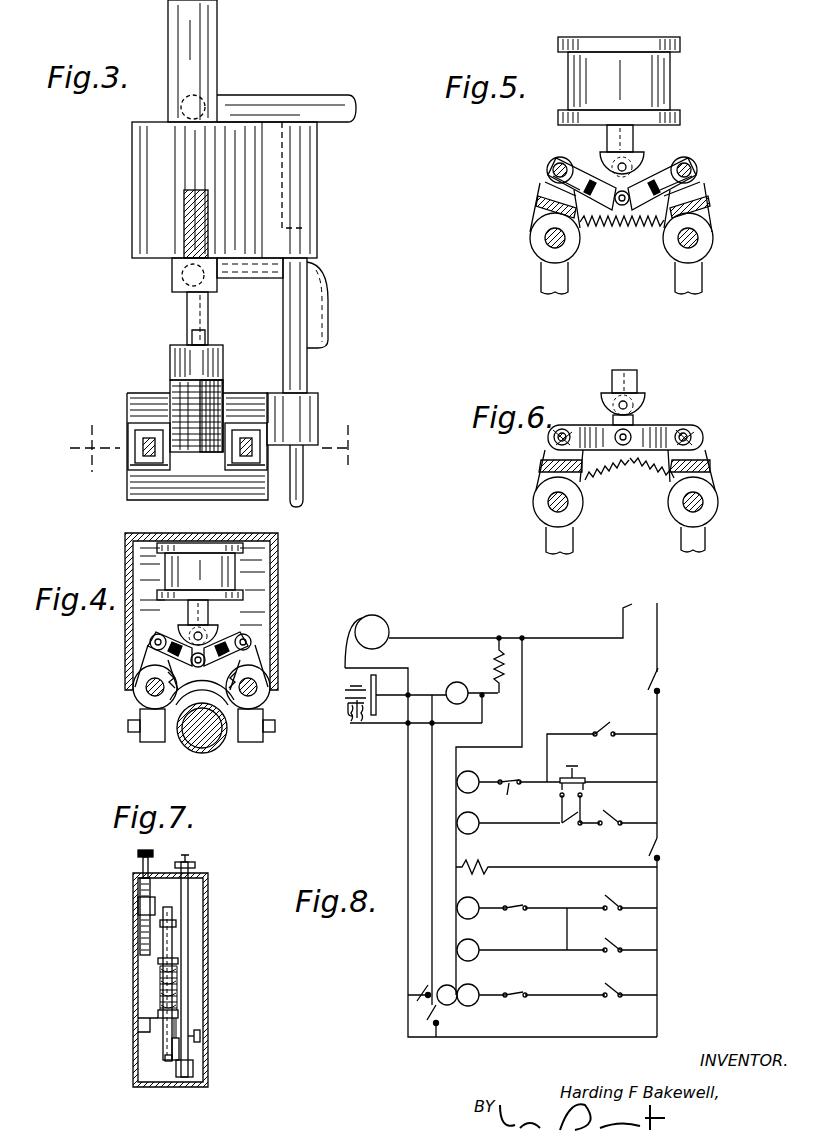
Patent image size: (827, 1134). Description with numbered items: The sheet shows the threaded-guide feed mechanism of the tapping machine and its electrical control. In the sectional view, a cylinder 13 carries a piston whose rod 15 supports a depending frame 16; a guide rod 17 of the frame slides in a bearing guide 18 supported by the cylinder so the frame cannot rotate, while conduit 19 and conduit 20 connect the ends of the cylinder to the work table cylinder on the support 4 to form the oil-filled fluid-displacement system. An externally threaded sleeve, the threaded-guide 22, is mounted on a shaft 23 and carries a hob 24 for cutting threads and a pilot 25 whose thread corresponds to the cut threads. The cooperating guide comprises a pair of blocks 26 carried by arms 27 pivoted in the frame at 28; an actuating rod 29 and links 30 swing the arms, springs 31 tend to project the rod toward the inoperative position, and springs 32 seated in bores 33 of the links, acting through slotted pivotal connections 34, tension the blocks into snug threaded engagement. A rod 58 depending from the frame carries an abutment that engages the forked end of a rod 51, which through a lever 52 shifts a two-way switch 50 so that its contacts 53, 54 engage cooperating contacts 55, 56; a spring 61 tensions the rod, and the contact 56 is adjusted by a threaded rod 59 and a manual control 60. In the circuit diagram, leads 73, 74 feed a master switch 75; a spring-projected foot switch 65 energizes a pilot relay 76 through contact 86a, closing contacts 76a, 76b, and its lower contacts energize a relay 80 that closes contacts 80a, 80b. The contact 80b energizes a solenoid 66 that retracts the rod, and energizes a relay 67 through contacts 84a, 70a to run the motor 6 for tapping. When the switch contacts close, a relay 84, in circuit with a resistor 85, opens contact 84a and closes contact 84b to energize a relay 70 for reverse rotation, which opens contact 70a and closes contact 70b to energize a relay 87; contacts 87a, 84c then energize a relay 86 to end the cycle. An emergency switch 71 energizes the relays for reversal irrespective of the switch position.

In FIG. 3, the support 4 is at (212, 448).
In FIG. 8, the motor 6 is at (372, 615).
In FIG. 3, the second cylinder 13 is at (145, 205).
In FIG. 3, the piston rod 15 is at (192, 303).
In FIG. 3, the frame 16 is at (135, 398).
In FIG. 4, the frame 16 is at (278, 585).
In FIG. 3, the guide rod 17 is at (300, 292).
In FIG. 3, the bearing guide 18 is at (310, 238).
In FIG. 3, the conduit 19 is at (252, 105).
In FIG. 3, the conduit 20 is at (258, 272).
In FIG. 3, the threaded-guide 22 is at (222, 392).
In FIG. 4, the threaded-guide 22 is at (190, 750).
In FIG. 3, the shaft 23 is at (195, 338).
In FIG. 4, the shaft 23 is at (210, 745).
In FIG. 3, the hob 24 is at (215, 355).
In FIG. 3, the pilot 25 is at (200, 452).
In FIG. 3, the blocks 26 is at (168, 470).
In FIG. 4, the blocks 26 is at (165, 735).
In FIG. 3, the arms 27 is at (140, 468).
In FIG. 4, the arms 27 is at (140, 672).
In FIG. 5, the arms 27 is at (532, 214).
In FIG. 6, the arms 27 is at (570, 548).
In FIG. 3, the pivot 28 is at (149, 438).
In FIG. 4, the pivot 28 is at (150, 694).
In FIG. 5, the pivot 28 is at (550, 246).
In FIG. 6, the pivot 28 is at (553, 510).
In FIG. 4, the actuating rod 29 is at (206, 616).
In FIG. 5, the actuating rod 29 is at (633, 148).
In FIG. 6, the actuating rod 29 is at (637, 382).
In FIG. 4, the links 30 is at (180, 644).
In FIG. 5, the links 30 is at (606, 182).
In FIG. 6, the links 30 is at (598, 432).
In FIG. 4, the springs 31 is at (202, 688).
In FIG. 5, the springs 31 is at (622, 222).
In FIG. 6, the springs 31 is at (629, 469).
In FIG. 5, the springs 32 is at (688, 162).
In FIG. 6, the springs 32 is at (562, 428).
In FIG. 5, the bores 33 is at (560, 162).
In FIG. 6, the bores 33 is at (572, 428).
In FIG. 5, the slotted pivotal connections 34 is at (548, 184).
In FIG. 6, the slotted pivotal connections 34 is at (552, 442).
In FIG. 7, the two-way electrical switch 50 is at (156, 982).
In FIG. 8, the two-way electrical switch 50 is at (352, 710).
In FIG. 7, the rod 51 is at (188, 990).
In FIG. 7, the lever 52 is at (176, 1076).
In FIG. 7, the contact 53 is at (158, 1014).
In FIG. 8, the contact 53 is at (357, 718).
In FIG. 7, the contact 54 is at (158, 961).
In FIG. 8, the contact 54 is at (345, 690).
In FIG. 7, the cooperating contact 55 is at (168, 1020).
In FIG. 8, the cooperating contact 55 is at (350, 722).
In FIG. 7, the cooperating contact 56 is at (174, 922).
In FIG. 8, the cooperating contact 56 is at (357, 685).
In FIG. 3, the rod 58 is at (303, 488).
In FIG. 7, the threaded rod 59 is at (138, 895).
In FIG. 7, the manual control 60 is at (138, 853).
In FIG. 7, the spring 61 is at (190, 868).
In FIG. 8, the switch 65 is at (584, 774).
In FIG. 4, the solenoid 66 is at (230, 575).
In FIG. 5, the solenoid 66 is at (655, 95).
In FIG. 8, the solenoid 66 is at (556, 858).
In FIG. 8, the relay 67 is at (474, 988).
In FIG. 8, the relay 70 is at (452, 1003).
In FIG. 8, the normally closed contact 70a is at (518, 990).
In FIG. 8, the normally open contact 70b is at (612, 898).
In FIG. 8, the normally open switch 71 is at (424, 988).
In FIG. 8, the lead 73 is at (659, 608).
In FIG. 8, the lead 74 is at (501, 809).
In FIG. 8, the master switch 75 is at (660, 676).
In FIG. 8, the pilot relay 76 is at (472, 778).
In FIG. 8, the normally open contact 76a is at (606, 722).
In FIG. 8, the normally open contact 76b is at (614, 814).
In FIG. 8, the relay 80 is at (472, 818).
In FIG. 8, the normally open contact 80a is at (568, 825).
In FIG. 8, the normally open contact 80b is at (660, 846).
In FIG. 8, the relay 84 is at (456, 690).
In FIG. 8, the normally closed contact 84a is at (622, 977).
In FIG. 8, the normally open contact 84b is at (442, 1022).
In FIG. 8, the contact 84c is at (547, 910).
In FIG. 8, the resistor 85 is at (487, 665).
In FIG. 8, the relay 86 is at (474, 902).
In FIG. 8, the normally closed contact 86a is at (516, 795).
In FIG. 8, the relay 87 is at (474, 946).
In FIG. 8, the contact 87a is at (625, 933).